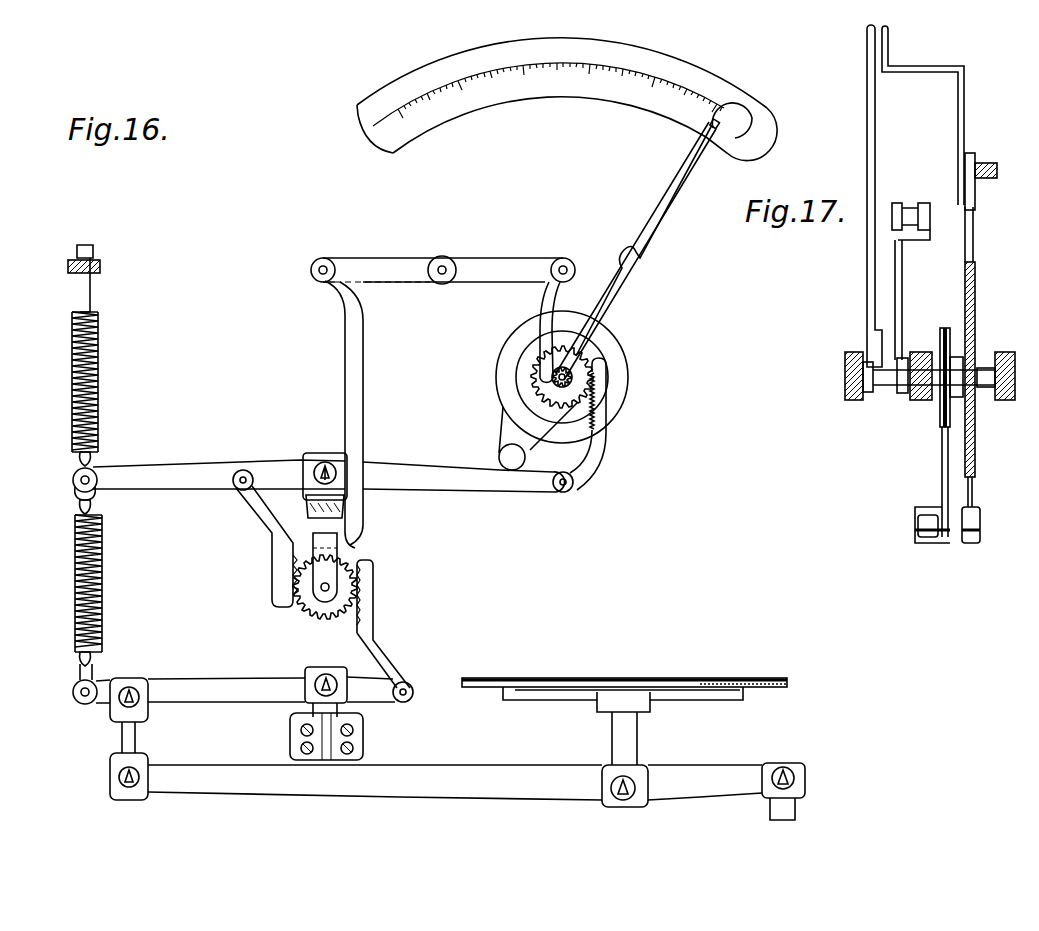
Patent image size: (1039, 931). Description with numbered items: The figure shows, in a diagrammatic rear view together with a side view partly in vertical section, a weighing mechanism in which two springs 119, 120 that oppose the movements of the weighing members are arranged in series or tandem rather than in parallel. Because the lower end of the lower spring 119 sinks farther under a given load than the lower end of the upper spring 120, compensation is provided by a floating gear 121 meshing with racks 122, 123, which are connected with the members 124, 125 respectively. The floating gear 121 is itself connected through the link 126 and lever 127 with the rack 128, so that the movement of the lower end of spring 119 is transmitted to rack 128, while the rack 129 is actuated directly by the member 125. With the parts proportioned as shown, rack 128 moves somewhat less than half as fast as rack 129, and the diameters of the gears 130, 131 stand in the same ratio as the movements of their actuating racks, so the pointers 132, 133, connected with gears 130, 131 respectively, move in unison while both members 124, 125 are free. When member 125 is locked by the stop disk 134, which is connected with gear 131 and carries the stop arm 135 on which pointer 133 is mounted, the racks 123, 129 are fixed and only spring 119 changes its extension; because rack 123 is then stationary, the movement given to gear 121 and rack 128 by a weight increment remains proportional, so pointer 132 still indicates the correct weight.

In FIG. 16, the spring 119 is at (102, 570).
In FIG. 16, the spring 120 is at (98, 375).
In FIG. 16, the floating gear 121 is at (318, 612).
In FIG. 16, the rack 122 is at (375, 612).
In FIG. 16, the rack 123 is at (272, 580).
In FIG. 16, the member 124 is at (247, 690).
In FIG. 16, the member 125 is at (195, 470).
In FIG. 16, the link 126 is at (360, 400).
In FIG. 16, the lever 127 is at (398, 268).
In FIG. 16, the rack 128 is at (535, 350).
In FIG. 17, the rack 128 is at (905, 297).
In FIG. 16, the rack 129 is at (606, 385).
In FIG. 17, the rack 129 is at (942, 450).
In FIG. 16, the gear 130 is at (502, 406).
In FIG. 17, the gear 130 is at (893, 397).
In FIG. 16, the gear 131 is at (608, 420).
In FIG. 17, the gear 131 is at (940, 420).
In FIG. 16, the pointer 132 is at (620, 320).
In FIG. 17, the pointer 132 is at (866, 265).
In FIG. 16, the pointer 133 is at (708, 130).
In FIG. 17, the pointer 133 is at (963, 112).
In FIG. 16, the stop disk 134 is at (627, 362).
In FIG. 17, the stop disk 134 is at (975, 302).
In FIG. 16, the stop arm 135 is at (630, 288).
In FIG. 17, the stop arm 135 is at (973, 238).